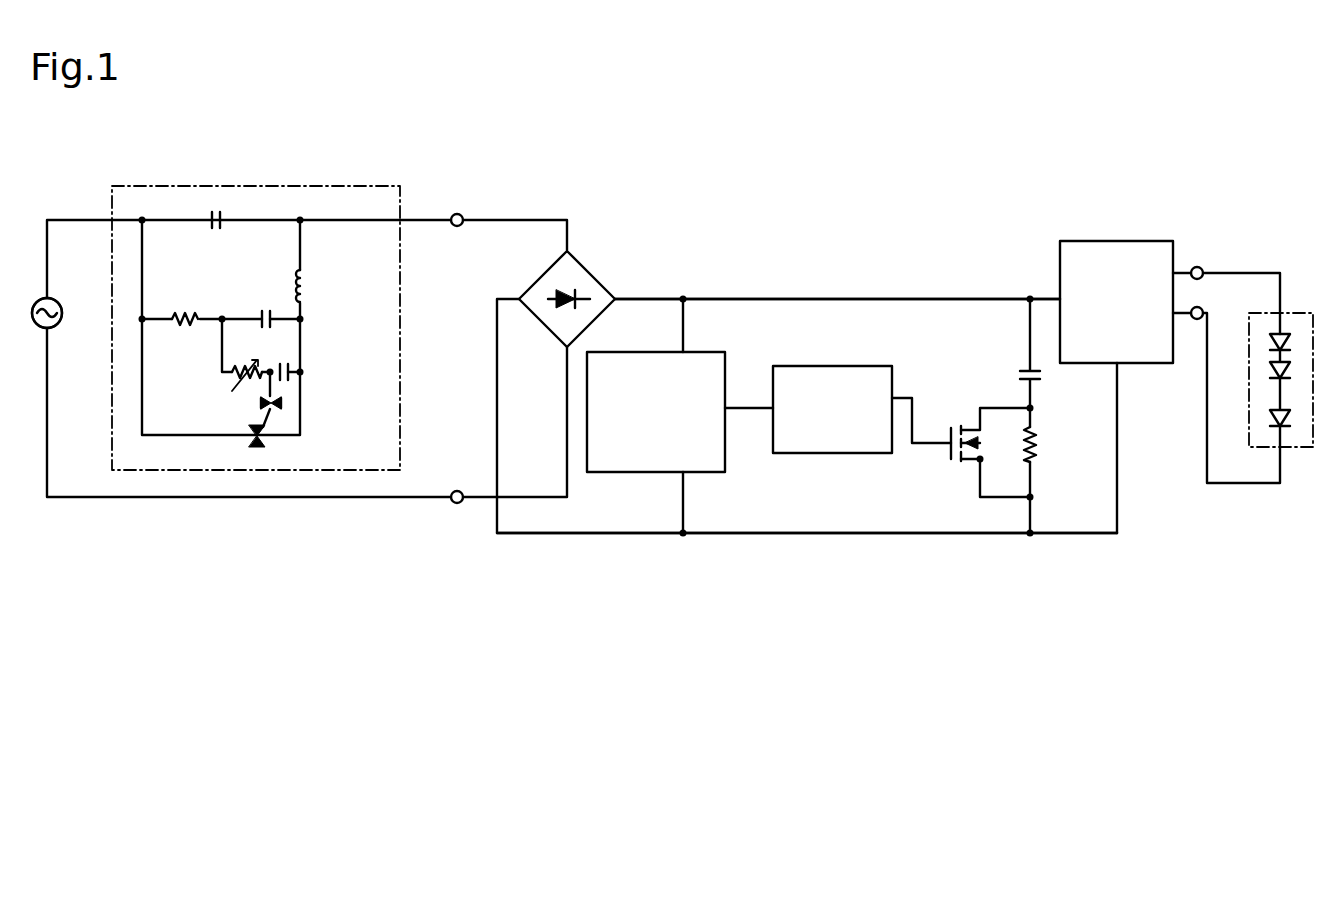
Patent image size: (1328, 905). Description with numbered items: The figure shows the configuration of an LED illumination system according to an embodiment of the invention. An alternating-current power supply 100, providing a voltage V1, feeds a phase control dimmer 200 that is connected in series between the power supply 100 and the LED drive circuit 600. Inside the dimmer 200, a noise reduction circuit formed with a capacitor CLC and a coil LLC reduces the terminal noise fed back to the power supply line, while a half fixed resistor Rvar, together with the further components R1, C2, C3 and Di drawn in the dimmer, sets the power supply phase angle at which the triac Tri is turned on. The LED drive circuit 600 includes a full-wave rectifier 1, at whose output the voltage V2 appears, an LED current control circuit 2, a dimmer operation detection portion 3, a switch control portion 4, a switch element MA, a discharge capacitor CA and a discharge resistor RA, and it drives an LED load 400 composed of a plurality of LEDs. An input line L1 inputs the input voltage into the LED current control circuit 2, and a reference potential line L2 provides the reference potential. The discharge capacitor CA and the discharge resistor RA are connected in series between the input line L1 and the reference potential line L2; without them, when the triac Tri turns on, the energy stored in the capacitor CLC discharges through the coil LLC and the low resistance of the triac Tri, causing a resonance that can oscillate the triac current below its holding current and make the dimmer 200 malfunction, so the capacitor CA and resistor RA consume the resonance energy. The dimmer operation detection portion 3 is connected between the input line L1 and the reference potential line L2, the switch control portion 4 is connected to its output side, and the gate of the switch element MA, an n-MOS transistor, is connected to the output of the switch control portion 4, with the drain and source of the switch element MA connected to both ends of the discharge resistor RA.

The alternating-current power supply 100 is at (63, 325).
The phase control dimmer 200 is at (256, 299).
The LED drive circuit 600 is at (914, 185).
The full-wave rectifier 1 is at (588, 263).
The LED current control circuit 2 is at (1160, 241).
The dimmer operation detection portion 3 is at (712, 353).
The switch control portion 4 is at (866, 366).
The LED load 400 is at (1296, 313).
The voltage of alternating-current power supply V1 is at (38, 295).
The rectified voltage V2 is at (837, 287).
The capacitor CLC is at (221, 234).
The coil LLC is at (319, 286).
The resistor R1 is at (183, 306).
The capacitor C2 is at (260, 308).
The capacitor C3 is at (280, 361).
The half fixed resistor Rvar is at (217, 378).
The diac Di is at (258, 405).
The triac Tri is at (259, 440).
The input line L1 is at (920, 299).
The reference potential line L2 is at (926, 536).
The switch element MA is at (981, 452).
The discharge capacitor CA is at (1049, 377).
The discharge resistor RA is at (1050, 444).